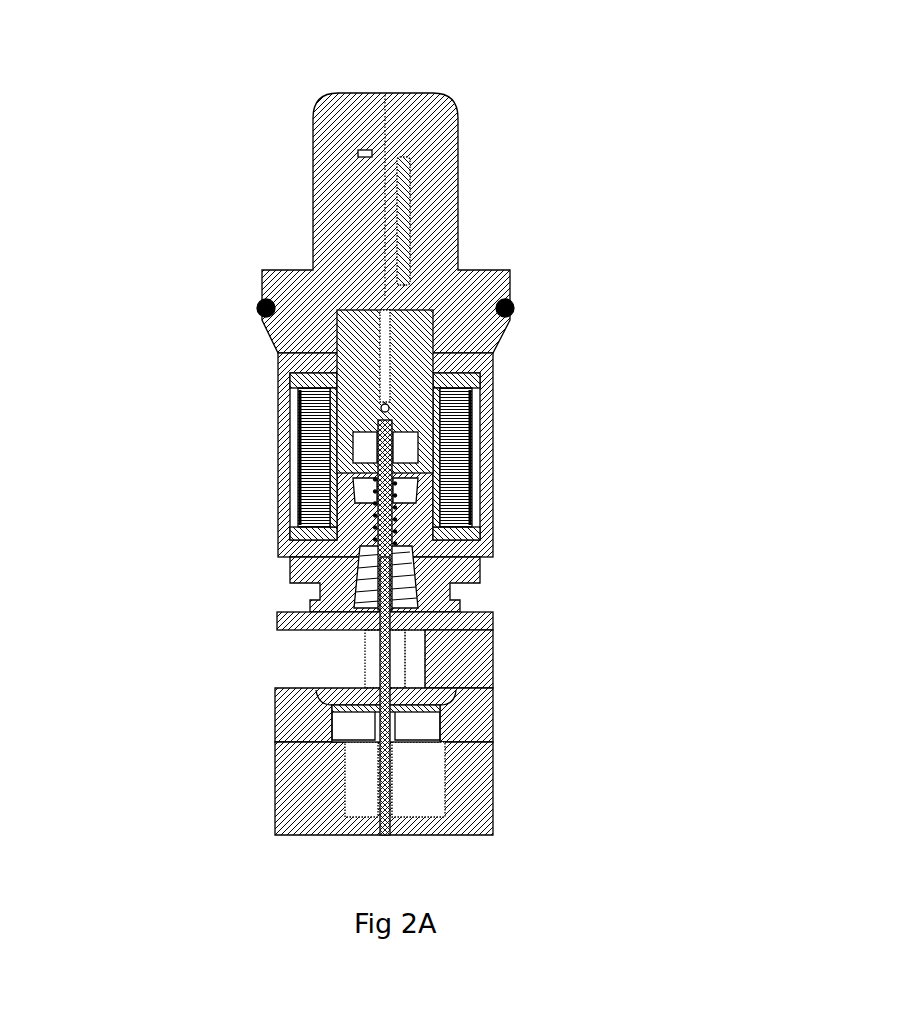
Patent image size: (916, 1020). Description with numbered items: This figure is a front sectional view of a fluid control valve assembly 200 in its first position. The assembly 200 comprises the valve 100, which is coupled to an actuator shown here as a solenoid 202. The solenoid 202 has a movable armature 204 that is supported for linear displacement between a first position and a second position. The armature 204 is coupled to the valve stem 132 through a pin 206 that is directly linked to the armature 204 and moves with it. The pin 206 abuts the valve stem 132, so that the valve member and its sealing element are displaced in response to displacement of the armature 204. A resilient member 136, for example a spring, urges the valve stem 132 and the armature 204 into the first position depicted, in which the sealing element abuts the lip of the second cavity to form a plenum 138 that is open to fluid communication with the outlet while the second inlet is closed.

The valve 100 is at (559, 685).
The valve stem 132 is at (390, 638).
The resilient member 136 is at (360, 590).
The plenum 138 is at (418, 720).
The fluid control valve assembly 200 is at (497, 352).
The solenoid 202 is at (503, 418).
The armature 204 is at (435, 325).
The pin 206 is at (375, 455).